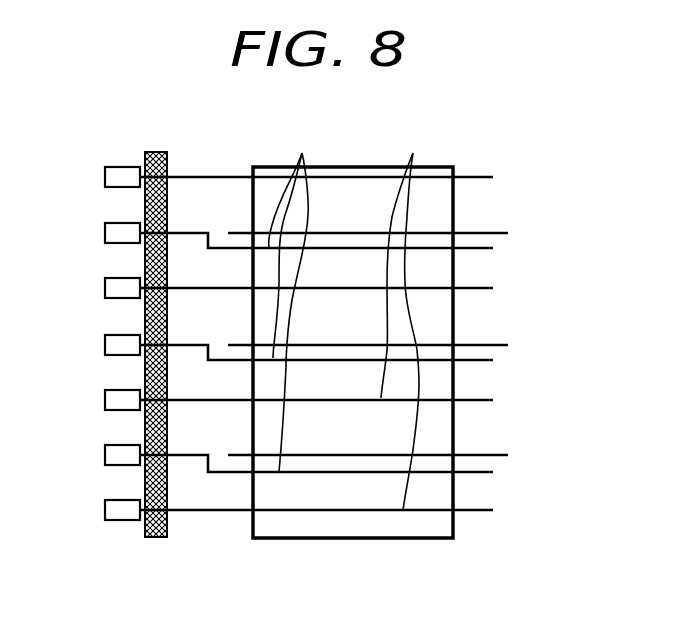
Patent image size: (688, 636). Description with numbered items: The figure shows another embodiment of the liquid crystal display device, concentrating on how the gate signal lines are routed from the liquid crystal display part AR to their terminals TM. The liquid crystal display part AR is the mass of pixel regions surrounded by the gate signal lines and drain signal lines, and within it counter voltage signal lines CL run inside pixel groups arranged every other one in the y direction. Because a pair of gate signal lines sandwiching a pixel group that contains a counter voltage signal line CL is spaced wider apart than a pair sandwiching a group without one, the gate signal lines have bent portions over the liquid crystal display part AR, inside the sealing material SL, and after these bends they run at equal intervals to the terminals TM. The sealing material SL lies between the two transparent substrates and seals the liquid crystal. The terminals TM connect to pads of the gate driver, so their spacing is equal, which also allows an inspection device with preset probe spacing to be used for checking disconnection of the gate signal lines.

The terminals TM is at (115, 328).
The sealing material SL is at (156, 360).
The counter voltage signal line CL is at (508, 455).
The liquid crystal display part AR is at (347, 538).